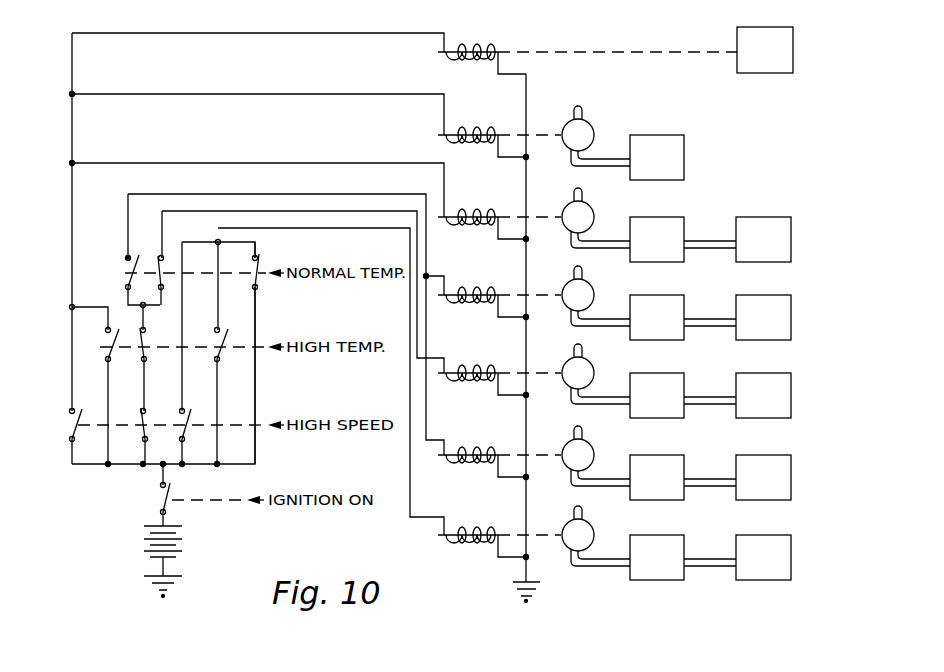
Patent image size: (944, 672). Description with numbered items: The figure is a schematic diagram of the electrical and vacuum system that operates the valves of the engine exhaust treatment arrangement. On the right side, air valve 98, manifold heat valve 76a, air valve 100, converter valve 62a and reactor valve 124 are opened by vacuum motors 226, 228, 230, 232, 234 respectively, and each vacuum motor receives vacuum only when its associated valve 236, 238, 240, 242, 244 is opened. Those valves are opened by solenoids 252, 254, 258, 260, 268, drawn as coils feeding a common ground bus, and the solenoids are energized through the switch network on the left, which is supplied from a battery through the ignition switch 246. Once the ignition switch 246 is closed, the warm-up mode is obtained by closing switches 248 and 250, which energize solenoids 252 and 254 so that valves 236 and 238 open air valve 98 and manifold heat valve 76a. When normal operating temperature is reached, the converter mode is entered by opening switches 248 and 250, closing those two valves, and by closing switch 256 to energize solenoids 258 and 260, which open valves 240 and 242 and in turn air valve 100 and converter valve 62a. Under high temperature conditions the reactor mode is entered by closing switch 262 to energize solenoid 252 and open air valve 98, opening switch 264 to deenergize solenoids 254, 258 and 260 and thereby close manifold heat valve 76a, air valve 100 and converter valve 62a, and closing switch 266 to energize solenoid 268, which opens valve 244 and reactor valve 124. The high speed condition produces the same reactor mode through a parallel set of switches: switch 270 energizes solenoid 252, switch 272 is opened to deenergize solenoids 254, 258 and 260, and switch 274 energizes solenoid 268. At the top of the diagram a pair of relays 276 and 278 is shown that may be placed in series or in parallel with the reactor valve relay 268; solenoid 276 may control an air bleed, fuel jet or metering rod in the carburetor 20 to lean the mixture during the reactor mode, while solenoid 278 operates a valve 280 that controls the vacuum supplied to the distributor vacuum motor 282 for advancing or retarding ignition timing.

The carburetor 20 is at (777, 63).
The converter valve 62a is at (780, 309).
The manifold heat valve 76a is at (780, 468).
The air valve 98 is at (778, 552).
The air valve 100 is at (780, 387).
The reactor valve 124 is at (775, 228).
The vacuum motor 226 is at (660, 543).
The vacuum motor 228 is at (660, 466).
The vacuum motor 230 is at (662, 384).
The vacuum motor 232 is at (662, 304).
The vacuum motor 234 is at (662, 226).
The valve 236 is at (589, 527).
The valve 238 is at (589, 447).
The valve 240 is at (589, 365).
The valve 242 is at (589, 287).
The valve 244 is at (589, 209).
The ignition switch 246 is at (172, 508).
The switch 248 is at (258, 266).
The switch 250 is at (162, 262).
The solenoid 252 is at (473, 528).
The solenoid 254 is at (486, 432).
The switch 256 is at (126, 280).
The solenoid 258 is at (484, 350).
The solenoid 260 is at (482, 270).
The switch 262 is at (220, 350).
The switch 264 is at (147, 352).
The switch 266 is at (112, 347).
The solenoid 268 is at (484, 190).
The switch 270 is at (184, 433).
The switch 272 is at (140, 432).
The switch 274 is at (76, 430).
The relay 276 is at (468, 50).
The relay 278 is at (490, 108).
The valve 280 is at (586, 124).
The distributor vacuum motor 282 is at (672, 147).